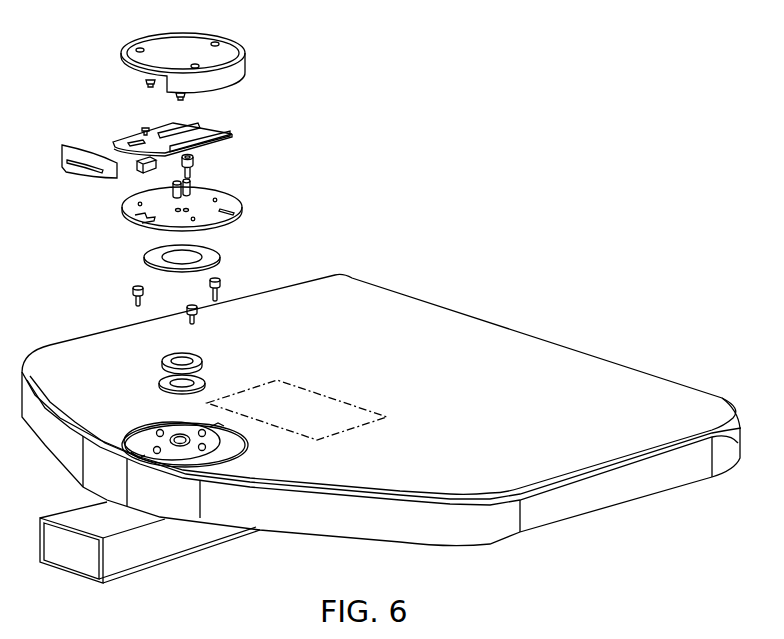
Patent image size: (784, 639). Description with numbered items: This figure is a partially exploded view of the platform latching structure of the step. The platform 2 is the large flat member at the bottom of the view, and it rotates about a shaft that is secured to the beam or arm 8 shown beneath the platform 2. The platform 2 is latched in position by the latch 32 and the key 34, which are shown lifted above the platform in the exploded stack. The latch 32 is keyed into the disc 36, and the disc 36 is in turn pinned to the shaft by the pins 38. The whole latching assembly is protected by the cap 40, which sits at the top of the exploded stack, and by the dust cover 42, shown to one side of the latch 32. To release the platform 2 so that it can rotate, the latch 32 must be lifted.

The platform 2 is at (497, 333).
The beam or arm 8 is at (167, 553).
The latch 32 is at (172, 124).
The key 34 is at (143, 172).
The disc 36 is at (237, 222).
The pins 38 is at (192, 192).
The cap 40 is at (240, 44).
The dust cover 42 is at (70, 175).